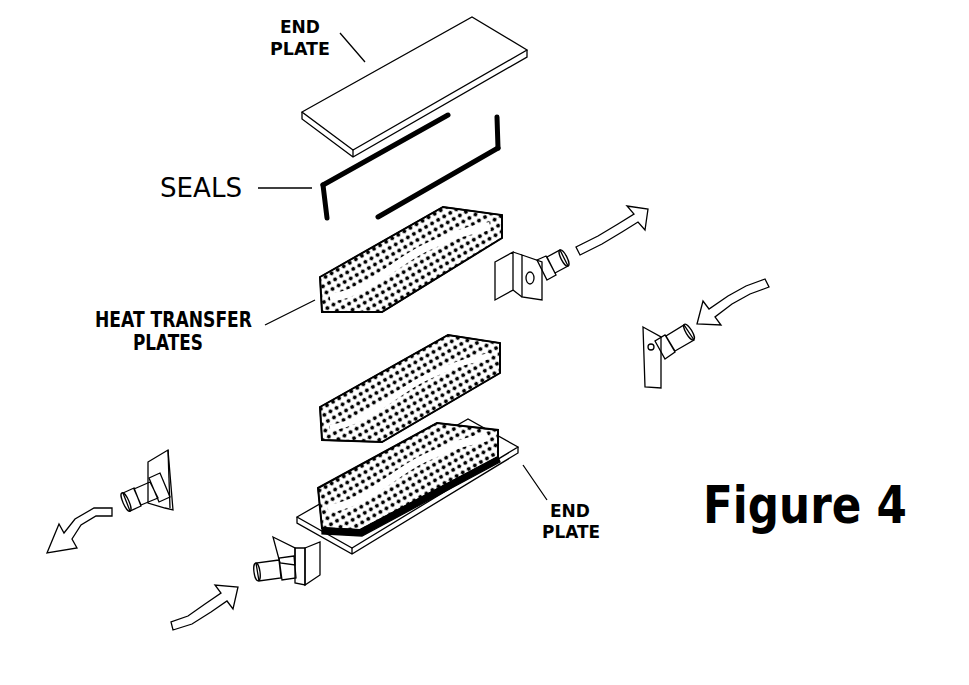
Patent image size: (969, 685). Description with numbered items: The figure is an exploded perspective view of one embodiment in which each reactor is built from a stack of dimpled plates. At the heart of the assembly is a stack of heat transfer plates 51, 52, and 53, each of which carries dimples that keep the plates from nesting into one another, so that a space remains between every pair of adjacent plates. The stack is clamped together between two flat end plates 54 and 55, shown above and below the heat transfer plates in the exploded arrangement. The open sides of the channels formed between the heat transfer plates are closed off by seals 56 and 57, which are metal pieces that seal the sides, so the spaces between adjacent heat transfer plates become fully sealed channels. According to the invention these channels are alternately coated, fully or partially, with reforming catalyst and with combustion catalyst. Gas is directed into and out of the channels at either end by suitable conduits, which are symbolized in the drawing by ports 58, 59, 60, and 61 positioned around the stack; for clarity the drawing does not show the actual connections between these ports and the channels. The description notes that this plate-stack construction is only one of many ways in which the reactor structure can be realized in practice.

The heat transfer plate 51 is at (415, 510).
The heat transfer plate 52 is at (500, 360).
The heat transfer plate 53 is at (490, 207).
The end plate 54 is at (522, 448).
The end plate 55 is at (467, 52).
The seal 56 is at (500, 138).
The seal 57 is at (330, 182).
The port 58 is at (162, 463).
The port 59 is at (283, 577).
The port 60 is at (530, 255).
The port 61 is at (667, 362).